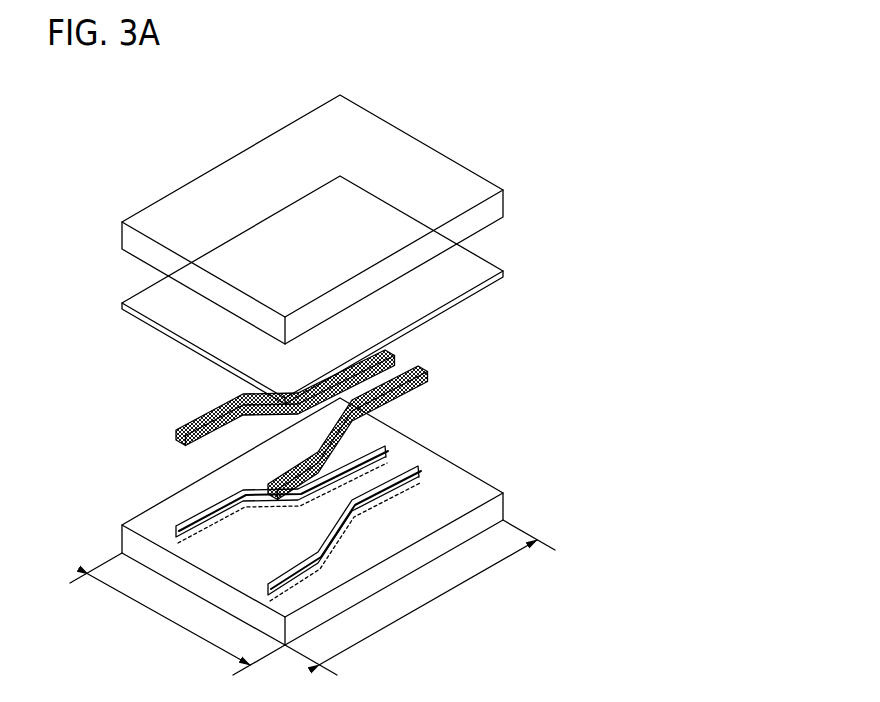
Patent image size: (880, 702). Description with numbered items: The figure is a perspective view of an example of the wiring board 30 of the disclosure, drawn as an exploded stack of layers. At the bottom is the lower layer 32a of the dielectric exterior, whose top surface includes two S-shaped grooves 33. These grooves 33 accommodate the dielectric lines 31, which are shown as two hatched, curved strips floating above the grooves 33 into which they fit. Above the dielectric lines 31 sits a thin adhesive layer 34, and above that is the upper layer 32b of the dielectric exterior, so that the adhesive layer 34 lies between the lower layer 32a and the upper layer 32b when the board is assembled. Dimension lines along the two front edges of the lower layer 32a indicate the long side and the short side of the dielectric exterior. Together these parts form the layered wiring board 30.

The wiring board 30 is at (148, 155).
The upper layer 32b is at (453, 178).
The adhesive layer 34 is at (453, 271).
The dielectric line 31 is at (424, 368).
The groove 33 is at (428, 463).
The lower layer 32a is at (363, 521).